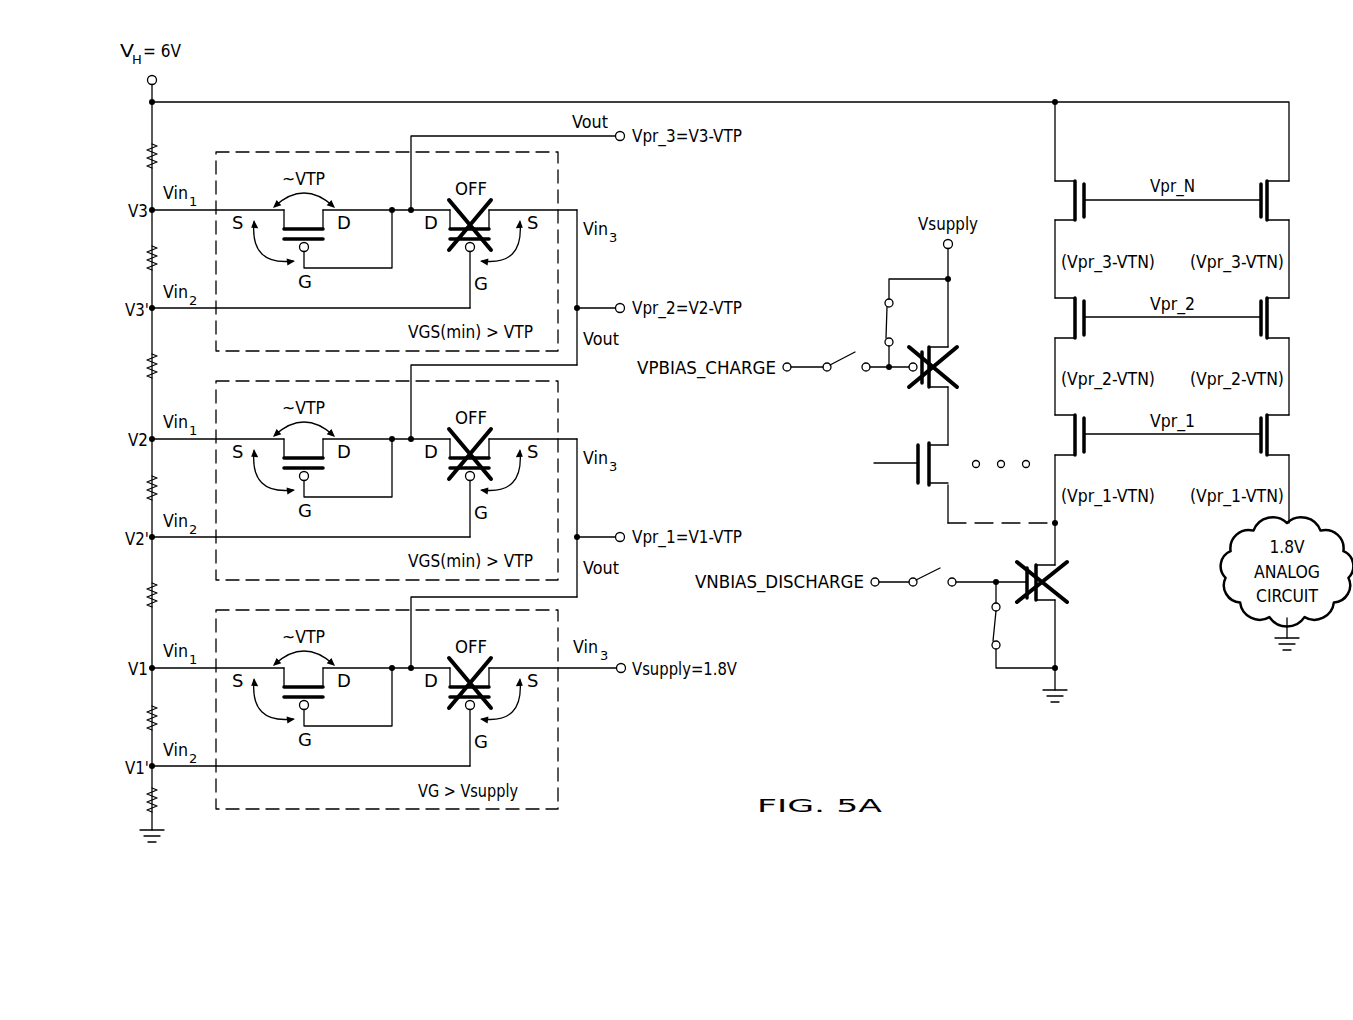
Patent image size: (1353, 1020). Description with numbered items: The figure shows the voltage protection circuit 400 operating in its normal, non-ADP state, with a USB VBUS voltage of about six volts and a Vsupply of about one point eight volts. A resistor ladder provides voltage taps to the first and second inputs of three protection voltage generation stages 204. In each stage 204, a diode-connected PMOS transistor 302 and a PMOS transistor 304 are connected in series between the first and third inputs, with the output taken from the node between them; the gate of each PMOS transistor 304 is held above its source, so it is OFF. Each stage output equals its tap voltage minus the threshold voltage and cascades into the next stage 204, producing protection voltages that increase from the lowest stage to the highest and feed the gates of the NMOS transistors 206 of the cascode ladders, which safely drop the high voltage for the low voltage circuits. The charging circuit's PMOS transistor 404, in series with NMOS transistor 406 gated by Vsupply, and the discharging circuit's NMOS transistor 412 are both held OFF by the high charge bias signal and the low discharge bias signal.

The voltage protection circuit 400 is at (842, 80).
The protection voltage generation stage 204 is at (565, 182).
The PMOS transistor 302 is at (312, 248).
The PMOS transistor 304 is at (466, 252).
The PMOS transistor 404 is at (908, 376).
The NMOS transistor 406 is at (912, 478).
The NMOS transistor 412 is at (1020, 575).
The NMOS transistor 206 is at (1086, 210).